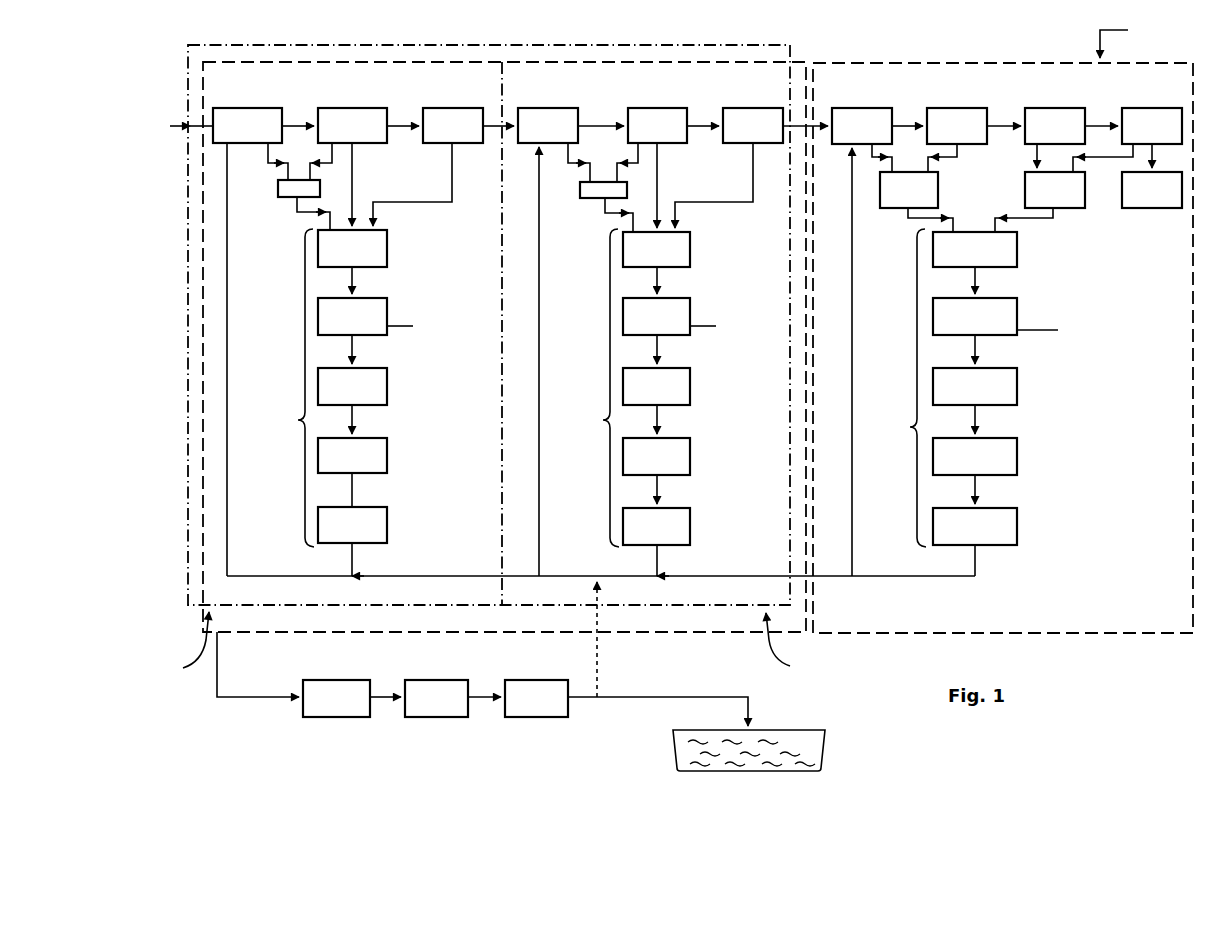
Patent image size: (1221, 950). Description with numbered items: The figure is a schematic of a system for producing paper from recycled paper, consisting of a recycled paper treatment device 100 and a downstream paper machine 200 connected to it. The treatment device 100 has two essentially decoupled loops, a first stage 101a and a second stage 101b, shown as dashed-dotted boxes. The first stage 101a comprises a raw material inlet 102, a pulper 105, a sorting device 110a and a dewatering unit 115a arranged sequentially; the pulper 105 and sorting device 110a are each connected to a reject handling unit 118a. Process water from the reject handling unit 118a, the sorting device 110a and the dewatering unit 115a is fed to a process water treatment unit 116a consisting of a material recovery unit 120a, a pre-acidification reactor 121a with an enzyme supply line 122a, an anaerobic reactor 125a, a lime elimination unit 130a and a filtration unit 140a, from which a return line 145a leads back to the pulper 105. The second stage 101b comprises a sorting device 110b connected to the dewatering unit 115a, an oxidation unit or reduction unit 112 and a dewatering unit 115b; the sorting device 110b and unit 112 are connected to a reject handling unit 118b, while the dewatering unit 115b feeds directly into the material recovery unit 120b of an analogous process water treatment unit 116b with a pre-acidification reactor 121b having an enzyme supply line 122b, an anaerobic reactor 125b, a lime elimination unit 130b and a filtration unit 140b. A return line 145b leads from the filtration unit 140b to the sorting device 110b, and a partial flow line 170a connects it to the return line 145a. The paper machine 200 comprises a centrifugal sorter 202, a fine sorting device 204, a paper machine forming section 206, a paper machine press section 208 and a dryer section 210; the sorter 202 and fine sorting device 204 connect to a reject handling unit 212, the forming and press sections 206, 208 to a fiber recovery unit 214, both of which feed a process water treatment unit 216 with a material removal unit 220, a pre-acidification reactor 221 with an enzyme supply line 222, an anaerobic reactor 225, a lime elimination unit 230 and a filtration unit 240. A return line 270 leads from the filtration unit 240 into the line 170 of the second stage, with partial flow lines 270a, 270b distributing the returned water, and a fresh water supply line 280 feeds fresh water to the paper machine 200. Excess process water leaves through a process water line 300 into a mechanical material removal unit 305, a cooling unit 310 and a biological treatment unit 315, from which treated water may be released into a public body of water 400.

The recycled paper treatment device 100 is at (617, 60).
The raw material inlet 102 is at (193, 120).
The pulper 105 is at (257, 128).
The sorting device 110a is at (352, 128).
The sorting device 110b is at (552, 128).
The oxidation unit or reduction unit 112 is at (656, 128).
The dewatering unit 115a is at (457, 128).
The dewatering unit 115b is at (762, 128).
The reject handling unit 118a is at (290, 192).
The reject handling unit 118b is at (600, 192).
The material recovery unit 120a is at (388, 250).
The material recovery unit 120b is at (691, 250).
The pre-acidification reactor 121a is at (388, 317).
The pre-acidification reactor 121b is at (691, 317).
The enzyme supply line 122a is at (413, 326).
The enzyme supply line 122b is at (716, 326).
The anaerobic reactor 125a is at (388, 388).
The anaerobic reactor 125b is at (691, 388).
The lime elimination unit 130a is at (388, 458).
The lime elimination unit 130b is at (691, 458).
The filtration unit 140a is at (388, 525).
The filtration unit 140b is at (691, 525).
The return line 145a is at (228, 300).
The return line 145b is at (570, 289).
The process water treatment unit 116a is at (282, 388).
The process water treatment unit 116b is at (587, 388).
The partial flow line 170a is at (423, 576).
The line 170 is at (655, 560).
The partial flow line 270a is at (707, 576).
The paper machine 200 is at (989, 61).
The centrifugal sorter 202 is at (869, 128).
The fine sorting device 204 is at (962, 128).
The paper machine forming section 206 is at (1059, 128).
The paper machine press section 208 is at (1155, 128).
The dryer section 210 is at (1138, 205).
The reject handling unit 212 is at (910, 205).
The fiber recovery unit 214 is at (1065, 205).
The process water treatment unit 216 is at (894, 388).
The material removal unit 220 is at (1018, 252).
The pre-acidification reactor 221 is at (1018, 317).
The enzyme supply line 222 is at (1044, 330).
The anaerobic reactor 225 is at (1018, 388).
The lime elimination unit 230 is at (1018, 458).
The filtration unit 240 is at (1018, 525).
The return line 270 is at (976, 566).
The partial flow line 270b is at (882, 296).
The fresh water supply line 280 is at (1132, 38).
The first stage 101a is at (174, 646).
The second stage 101b is at (801, 644).
The process water line 300 is at (218, 668).
The mechanical material removal unit 305 is at (330, 690).
The cooling unit 310 is at (430, 690).
The biological treatment unit 315 is at (535, 690).
The public body of water 400 is at (798, 740).